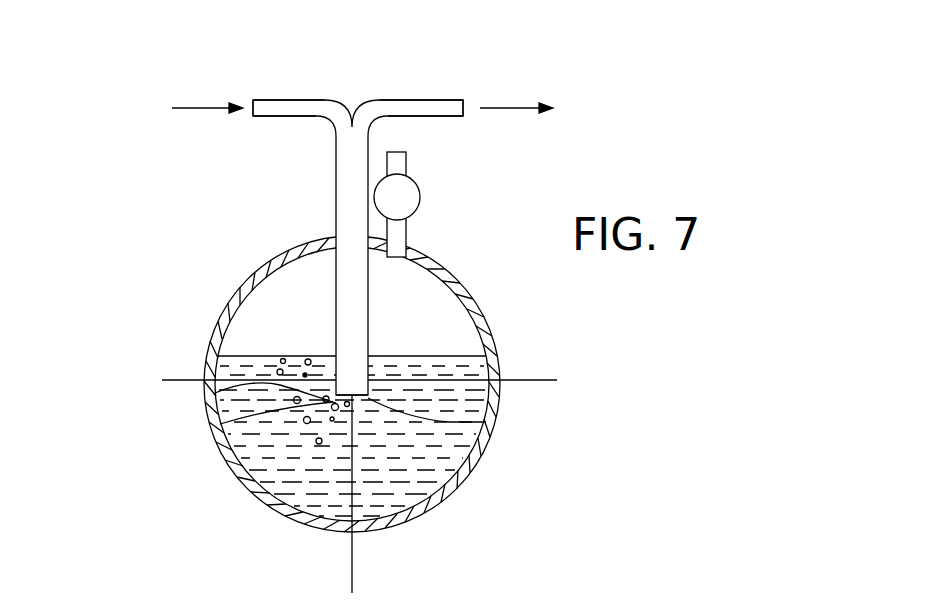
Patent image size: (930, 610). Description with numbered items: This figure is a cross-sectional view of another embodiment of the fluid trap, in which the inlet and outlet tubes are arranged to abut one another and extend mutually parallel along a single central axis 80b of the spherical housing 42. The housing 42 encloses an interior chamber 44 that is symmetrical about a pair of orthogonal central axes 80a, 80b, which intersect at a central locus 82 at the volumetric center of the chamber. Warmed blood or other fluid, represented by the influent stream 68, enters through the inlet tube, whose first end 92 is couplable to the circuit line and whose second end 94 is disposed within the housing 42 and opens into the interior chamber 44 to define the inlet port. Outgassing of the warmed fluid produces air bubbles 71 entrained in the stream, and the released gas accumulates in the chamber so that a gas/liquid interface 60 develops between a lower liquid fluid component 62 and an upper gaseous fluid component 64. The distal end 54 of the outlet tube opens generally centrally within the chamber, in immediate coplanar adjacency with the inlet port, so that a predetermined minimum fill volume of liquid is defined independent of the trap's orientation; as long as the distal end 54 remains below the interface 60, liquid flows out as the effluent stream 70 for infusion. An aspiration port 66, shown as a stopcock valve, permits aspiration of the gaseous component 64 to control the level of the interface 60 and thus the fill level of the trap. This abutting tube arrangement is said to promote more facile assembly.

The housing 42 is at (477, 297).
The interior chamber 44 is at (425, 320).
The distal end 54 is at (500, 420).
The gas/liquid interface 60 is at (458, 356).
The liquid fluid component 62 is at (423, 459).
The gaseous fluid component 64 is at (420, 280).
The aspiration port 66 is at (407, 159).
The influent fluid stream 68 is at (197, 104).
The effluent fluid stream 70 is at (503, 107).
The air bubbles 71 is at (305, 421).
The central axis 80a is at (190, 378).
The central axis 80b is at (357, 577).
The central locus 82 is at (355, 379).
The first end 92 is at (253, 100).
The second end 94 is at (305, 421).